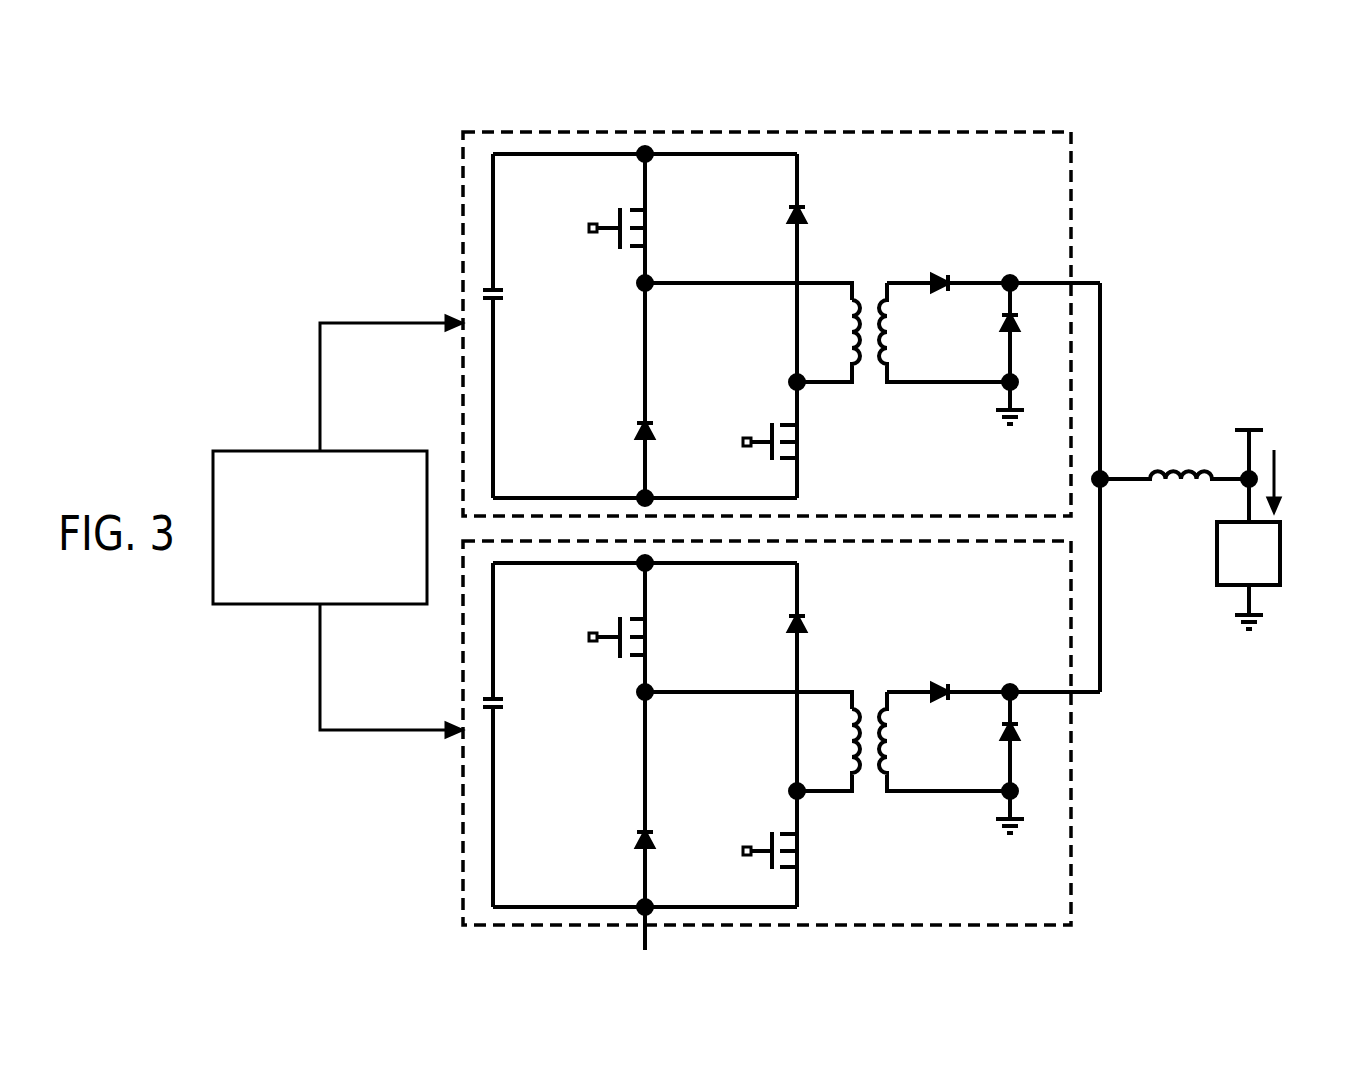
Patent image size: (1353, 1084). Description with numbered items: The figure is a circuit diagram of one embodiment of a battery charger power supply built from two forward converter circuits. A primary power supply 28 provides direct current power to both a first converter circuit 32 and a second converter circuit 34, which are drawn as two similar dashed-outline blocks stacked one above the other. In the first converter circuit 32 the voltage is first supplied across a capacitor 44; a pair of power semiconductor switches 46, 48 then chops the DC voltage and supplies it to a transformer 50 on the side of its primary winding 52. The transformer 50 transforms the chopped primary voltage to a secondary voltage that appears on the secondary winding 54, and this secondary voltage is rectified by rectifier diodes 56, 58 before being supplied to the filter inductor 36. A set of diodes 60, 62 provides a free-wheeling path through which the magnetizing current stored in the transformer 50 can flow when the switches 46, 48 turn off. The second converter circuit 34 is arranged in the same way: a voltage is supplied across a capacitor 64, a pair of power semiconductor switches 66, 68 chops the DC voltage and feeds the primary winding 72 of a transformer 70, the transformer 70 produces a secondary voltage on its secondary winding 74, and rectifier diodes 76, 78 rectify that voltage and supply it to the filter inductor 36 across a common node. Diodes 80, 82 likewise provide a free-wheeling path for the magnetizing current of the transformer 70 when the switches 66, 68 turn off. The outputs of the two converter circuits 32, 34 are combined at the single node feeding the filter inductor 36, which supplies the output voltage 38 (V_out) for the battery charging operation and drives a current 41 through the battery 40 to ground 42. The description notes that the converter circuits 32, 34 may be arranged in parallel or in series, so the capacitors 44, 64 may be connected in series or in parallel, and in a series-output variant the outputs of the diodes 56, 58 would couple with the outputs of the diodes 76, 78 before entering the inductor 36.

The primary power supply 28 is at (280, 451).
The first converter circuit 32 is at (1045, 131).
The second converter circuit 34 is at (817, 745).
The filter inductor 36 is at (1182, 490).
The output voltage 38 is at (1240, 436).
The battery 40 is at (1217, 568).
The current 41 is at (1318, 487).
The ground 42 is at (1258, 623).
The capacitor 44 is at (500, 300).
The power semiconductor switch 46 is at (590, 228).
The power semiconductor switch 48 is at (744, 442).
The transformer 50 is at (903, 366).
The primary winding 52 is at (852, 360).
The secondary winding 54 is at (887, 355).
The rectifier diode 56 is at (938, 280).
The rectifier diode 58 is at (1005, 326).
The diode 60 is at (803, 216).
The diode 62 is at (650, 430).
The capacitor 64 is at (518, 735).
The power semiconductor switch 66 is at (596, 652).
The power semiconductor switch 68 is at (750, 867).
The transformer 70 is at (903, 775).
The primary winding 72 is at (828, 750).
The secondary winding 74 is at (944, 741).
The rectifier diode 76 is at (993, 662).
The rectifier diode 78 is at (1001, 769).
The diode 80 is at (822, 606).
The diode 82 is at (671, 817).